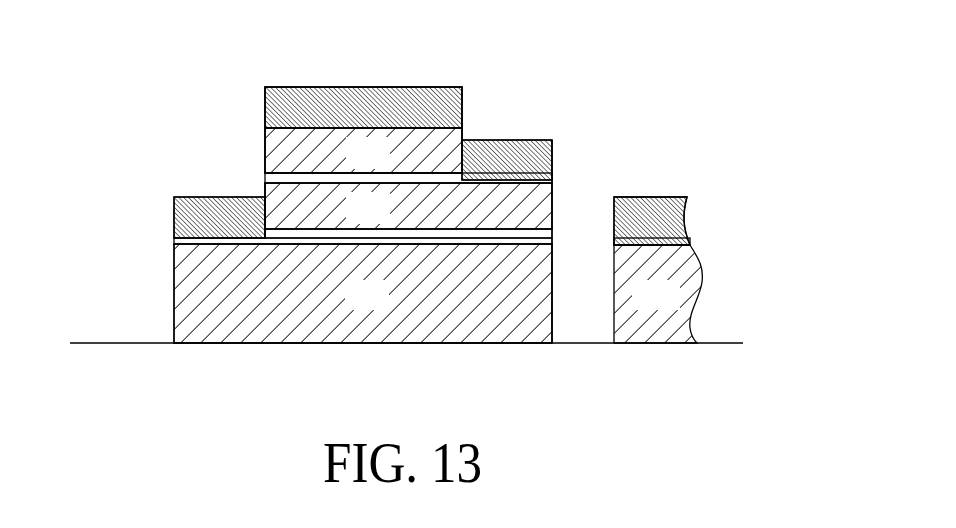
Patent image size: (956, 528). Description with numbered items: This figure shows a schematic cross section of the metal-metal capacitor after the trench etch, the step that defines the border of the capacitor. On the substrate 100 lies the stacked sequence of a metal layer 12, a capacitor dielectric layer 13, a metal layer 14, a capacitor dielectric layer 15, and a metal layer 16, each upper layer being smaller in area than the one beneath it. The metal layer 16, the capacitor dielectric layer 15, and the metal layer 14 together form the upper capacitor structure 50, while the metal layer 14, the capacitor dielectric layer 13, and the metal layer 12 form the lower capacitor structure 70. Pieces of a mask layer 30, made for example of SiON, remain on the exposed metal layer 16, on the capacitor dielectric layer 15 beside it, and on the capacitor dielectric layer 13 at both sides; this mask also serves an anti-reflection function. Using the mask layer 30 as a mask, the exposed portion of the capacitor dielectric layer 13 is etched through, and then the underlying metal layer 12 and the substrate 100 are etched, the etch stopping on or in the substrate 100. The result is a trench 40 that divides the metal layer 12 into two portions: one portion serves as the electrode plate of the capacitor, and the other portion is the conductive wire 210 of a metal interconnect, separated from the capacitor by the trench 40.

The metal layer 12 is at (353, 307).
The capacitor dielectric layer 13 is at (683, 241).
The metal layer 14 is at (354, 222).
The capacitor dielectric layer 15 is at (272, 178).
The metal layer 16 is at (354, 166).
The mask layer 30 is at (425, 97).
The trench 40 is at (582, 188).
The upper capacitor structure 50 is at (260, 138).
The lower capacitor structure 70 is at (262, 190).
The substrate 100 is at (350, 392).
The conductive wire 210 is at (634, 307).